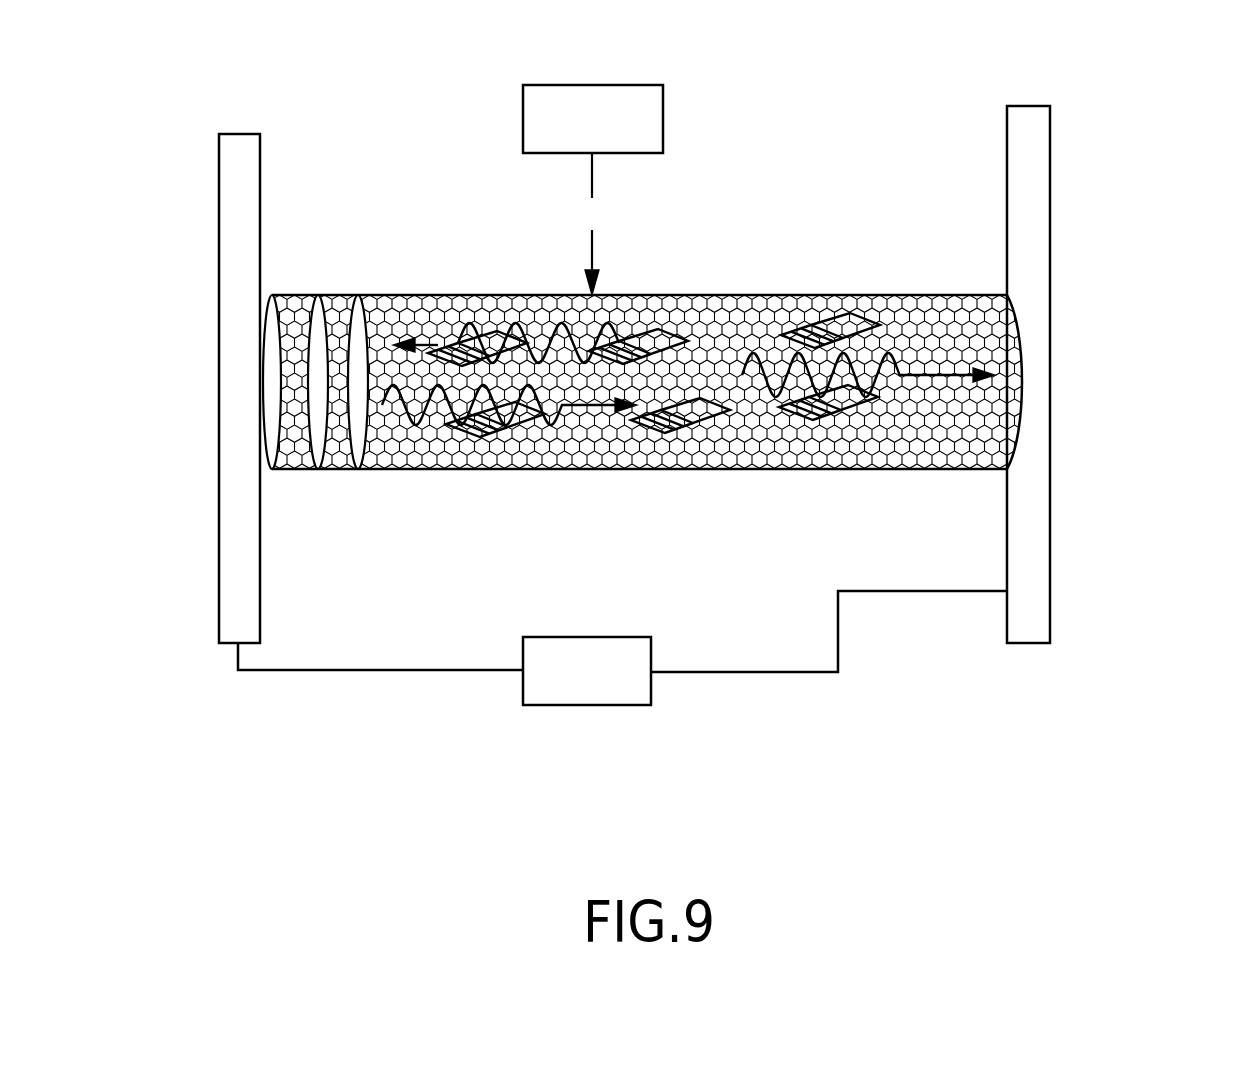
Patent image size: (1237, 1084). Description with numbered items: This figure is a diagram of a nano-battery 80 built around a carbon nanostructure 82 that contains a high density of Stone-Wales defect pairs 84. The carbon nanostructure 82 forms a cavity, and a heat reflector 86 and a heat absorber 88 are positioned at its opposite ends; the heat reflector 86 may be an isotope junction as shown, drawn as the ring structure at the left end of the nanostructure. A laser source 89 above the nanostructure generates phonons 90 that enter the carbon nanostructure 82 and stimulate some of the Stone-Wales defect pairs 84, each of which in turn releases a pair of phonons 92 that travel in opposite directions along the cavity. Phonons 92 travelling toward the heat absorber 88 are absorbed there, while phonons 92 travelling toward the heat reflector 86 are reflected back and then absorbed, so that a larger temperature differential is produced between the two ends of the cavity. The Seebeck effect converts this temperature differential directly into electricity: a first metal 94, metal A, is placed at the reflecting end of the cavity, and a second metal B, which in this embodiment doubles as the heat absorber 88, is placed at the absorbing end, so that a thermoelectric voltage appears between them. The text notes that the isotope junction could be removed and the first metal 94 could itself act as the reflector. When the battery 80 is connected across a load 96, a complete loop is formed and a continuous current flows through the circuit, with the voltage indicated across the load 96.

The battery 80 is at (1132, 724).
The carbon nanostructure 82 is at (642, 401).
The Stone-Wales defect pairs 84 is at (805, 413).
The heat reflector 86 is at (353, 506).
The heat absorber 88 is at (1050, 241).
The laser source 89 is at (663, 102).
The phonons 90 is at (592, 224).
The pair of phonons 92 is at (438, 345).
The first metal 94 is at (219, 193).
The load 96 is at (587, 637).